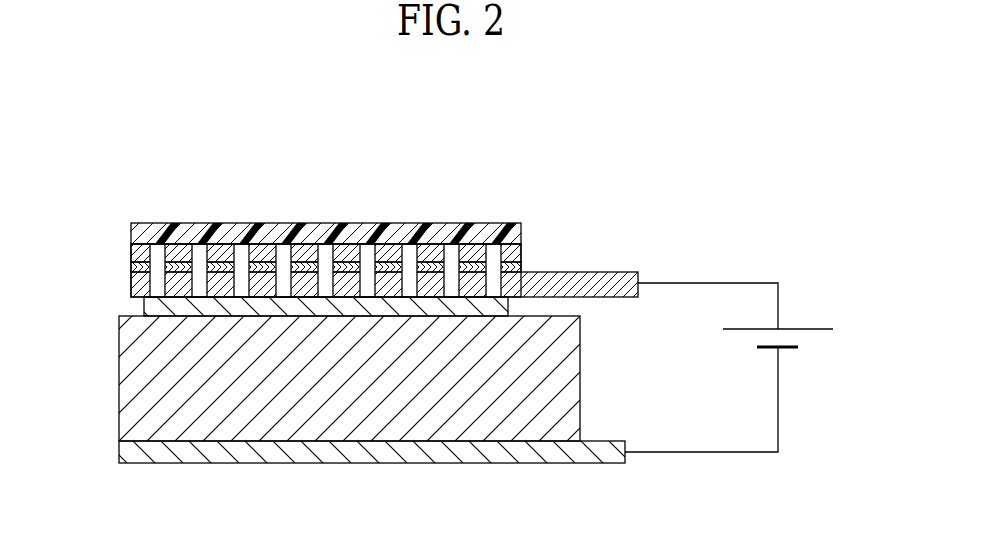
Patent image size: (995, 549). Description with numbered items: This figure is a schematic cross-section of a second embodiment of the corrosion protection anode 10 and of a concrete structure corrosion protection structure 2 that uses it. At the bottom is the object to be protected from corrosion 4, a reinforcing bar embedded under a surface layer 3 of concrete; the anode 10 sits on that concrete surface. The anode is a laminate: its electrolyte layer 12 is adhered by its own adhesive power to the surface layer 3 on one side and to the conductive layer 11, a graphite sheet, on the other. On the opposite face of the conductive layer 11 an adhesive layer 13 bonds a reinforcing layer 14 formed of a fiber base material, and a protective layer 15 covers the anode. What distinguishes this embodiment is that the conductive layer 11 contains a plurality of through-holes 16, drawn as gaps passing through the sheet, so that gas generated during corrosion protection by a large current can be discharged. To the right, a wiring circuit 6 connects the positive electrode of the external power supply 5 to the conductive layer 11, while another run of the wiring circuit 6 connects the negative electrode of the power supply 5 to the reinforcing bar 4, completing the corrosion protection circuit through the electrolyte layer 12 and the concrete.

The display device 2 is at (645, 197).
The surface layer 3 is at (563, 374).
The object to be protected from corrosion 4 is at (387, 445).
The external power supply 5 is at (798, 350).
The wiring circuit 6 is at (715, 282).
The corrosion protection anode 10 is at (113, 230).
The conductive layer 11 is at (598, 282).
The electrolyte layer 12 is at (236, 308).
The adhesive layer 13 is at (522, 268).
The reinforcing layer 14 is at (510, 248).
The protective layer 15 is at (465, 243).
The through-holes 16 is at (406, 256).